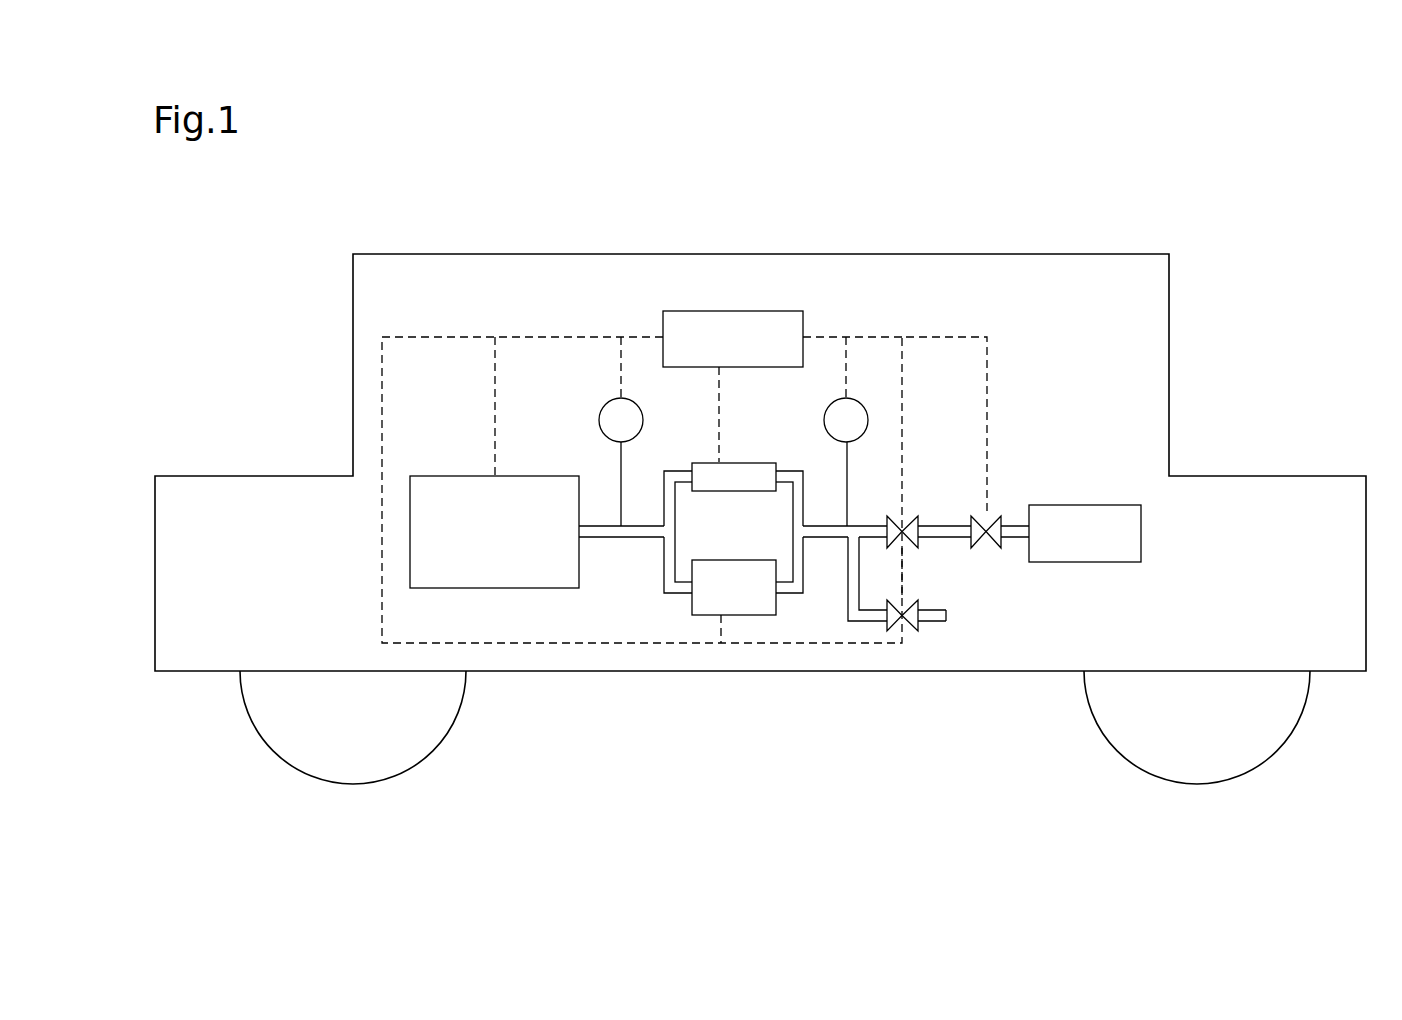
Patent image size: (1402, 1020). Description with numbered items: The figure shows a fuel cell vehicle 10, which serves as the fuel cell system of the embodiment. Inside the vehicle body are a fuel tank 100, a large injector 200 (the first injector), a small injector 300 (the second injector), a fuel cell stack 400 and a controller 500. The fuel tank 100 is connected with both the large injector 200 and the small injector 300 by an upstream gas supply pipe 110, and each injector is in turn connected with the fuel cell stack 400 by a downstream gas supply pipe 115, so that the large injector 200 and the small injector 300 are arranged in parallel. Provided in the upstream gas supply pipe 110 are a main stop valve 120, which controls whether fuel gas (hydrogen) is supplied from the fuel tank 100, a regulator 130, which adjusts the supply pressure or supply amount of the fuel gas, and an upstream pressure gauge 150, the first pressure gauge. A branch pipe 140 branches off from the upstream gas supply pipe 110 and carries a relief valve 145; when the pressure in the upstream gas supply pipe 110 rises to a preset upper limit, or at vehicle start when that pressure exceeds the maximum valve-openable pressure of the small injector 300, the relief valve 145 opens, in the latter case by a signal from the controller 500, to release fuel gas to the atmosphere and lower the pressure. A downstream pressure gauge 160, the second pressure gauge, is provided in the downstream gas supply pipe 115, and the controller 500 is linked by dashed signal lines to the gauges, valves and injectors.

The fuel cell vehicle 10 is at (919, 254).
The fuel tank 100 is at (1090, 505).
The upstream gas supply pipe 110 is at (859, 526).
The downstream gas supply pipe 115 is at (630, 525).
The main stop valve 120 is at (995, 515).
The regulator 130 is at (910, 522).
The branch pipe 140 is at (847, 548).
The relief valve 145 is at (898, 602).
The upstream pressure gauge 150 is at (867, 406).
The downstream pressure gauge 160 is at (642, 407).
The large injector 200 is at (717, 560).
The small injector 300 is at (727, 462).
The fuel cell stack 400 is at (525, 476).
The controller 500 is at (784, 311).